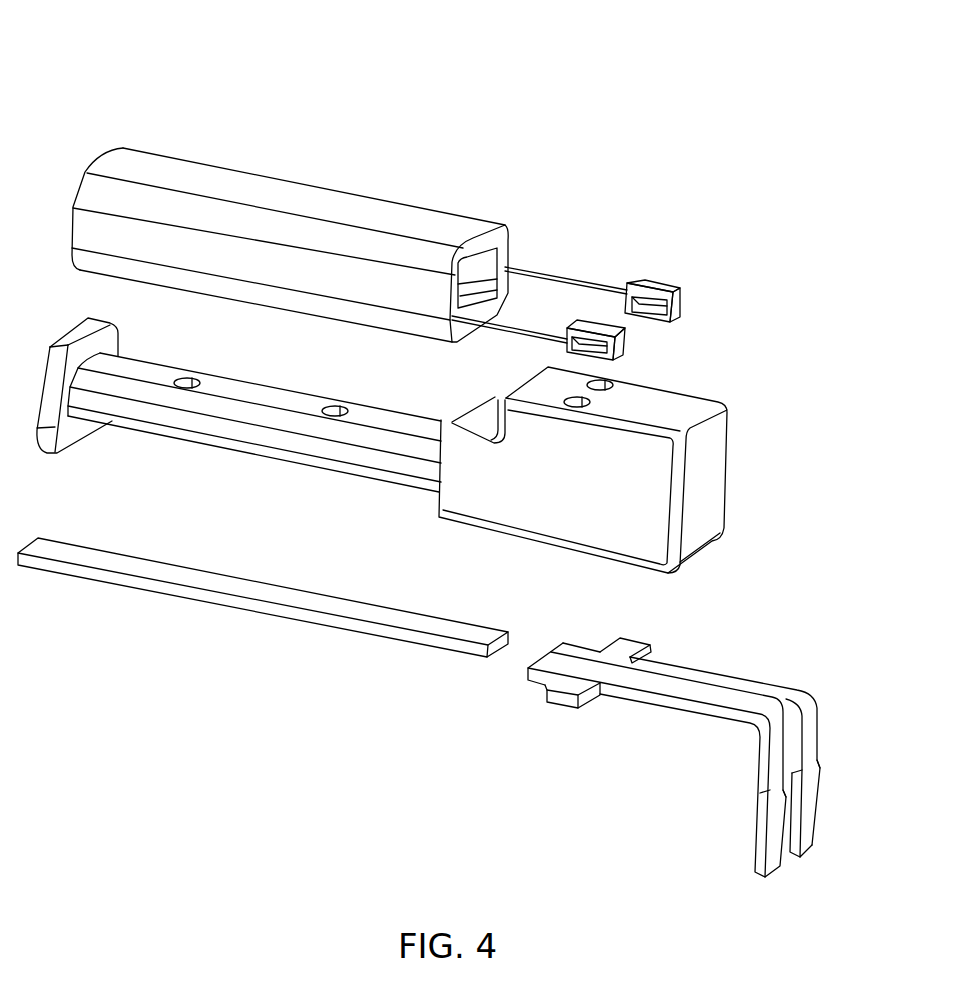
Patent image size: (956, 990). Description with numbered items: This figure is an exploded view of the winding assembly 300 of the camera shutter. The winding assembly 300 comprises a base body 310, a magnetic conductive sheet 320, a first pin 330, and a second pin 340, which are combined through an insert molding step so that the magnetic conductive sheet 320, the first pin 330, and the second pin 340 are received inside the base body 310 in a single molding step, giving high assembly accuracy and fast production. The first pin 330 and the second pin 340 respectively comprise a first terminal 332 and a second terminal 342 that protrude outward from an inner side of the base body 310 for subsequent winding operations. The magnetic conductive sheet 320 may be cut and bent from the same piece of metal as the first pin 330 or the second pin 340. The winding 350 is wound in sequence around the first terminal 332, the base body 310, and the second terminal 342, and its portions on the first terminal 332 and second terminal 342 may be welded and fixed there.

The winding assembly 300 is at (190, 70).
The base body 310 is at (681, 405).
The magnetic conductive sheet 320 is at (167, 590).
The first pin 330 is at (770, 833).
The first terminal 332 is at (565, 703).
The second pin 340 is at (808, 817).
The second terminal 342 is at (639, 647).
The winding 350 is at (305, 200).